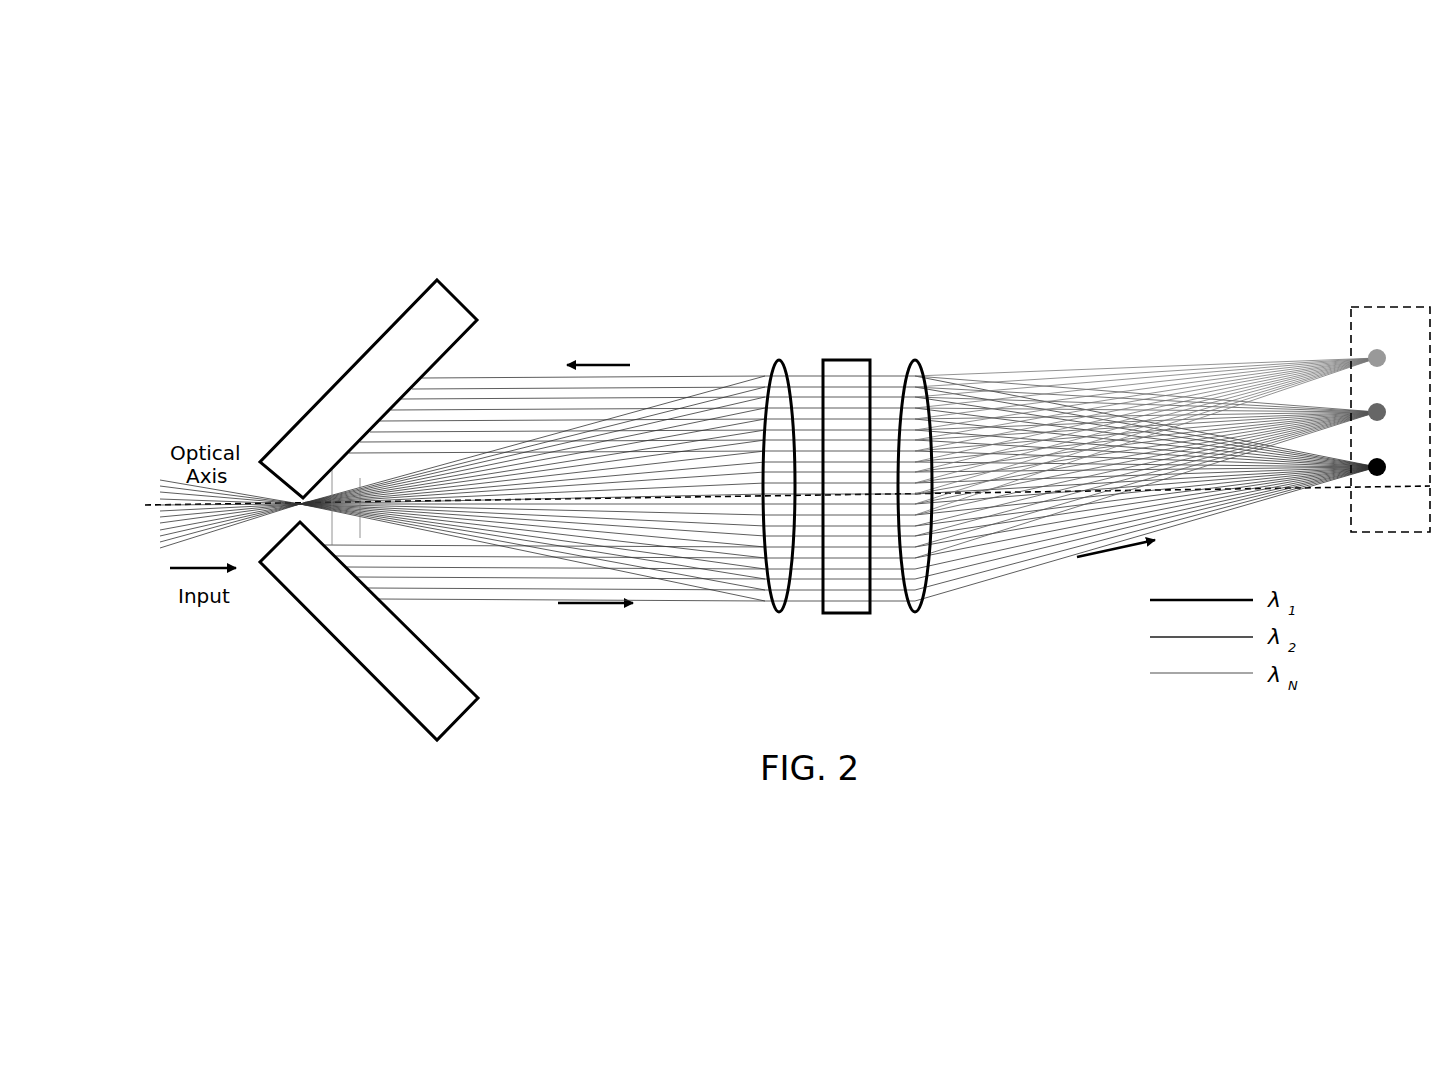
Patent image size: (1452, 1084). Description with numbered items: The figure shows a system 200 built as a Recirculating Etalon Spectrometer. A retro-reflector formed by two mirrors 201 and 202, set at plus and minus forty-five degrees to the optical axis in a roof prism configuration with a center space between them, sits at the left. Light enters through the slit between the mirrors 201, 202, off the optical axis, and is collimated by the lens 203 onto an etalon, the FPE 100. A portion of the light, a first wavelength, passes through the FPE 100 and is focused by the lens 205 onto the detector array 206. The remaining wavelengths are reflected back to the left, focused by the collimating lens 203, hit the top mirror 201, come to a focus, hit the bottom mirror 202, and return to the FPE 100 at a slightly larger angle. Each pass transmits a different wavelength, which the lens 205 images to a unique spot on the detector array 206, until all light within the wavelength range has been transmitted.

The system 200 is at (246, 314).
The mirror 201 is at (352, 367).
The mirror 202 is at (366, 668).
The collimating lens 203 is at (772, 612).
The FPE 100 is at (853, 612).
The focusing lens 205 is at (928, 598).
The detector array 206 is at (1405, 307).